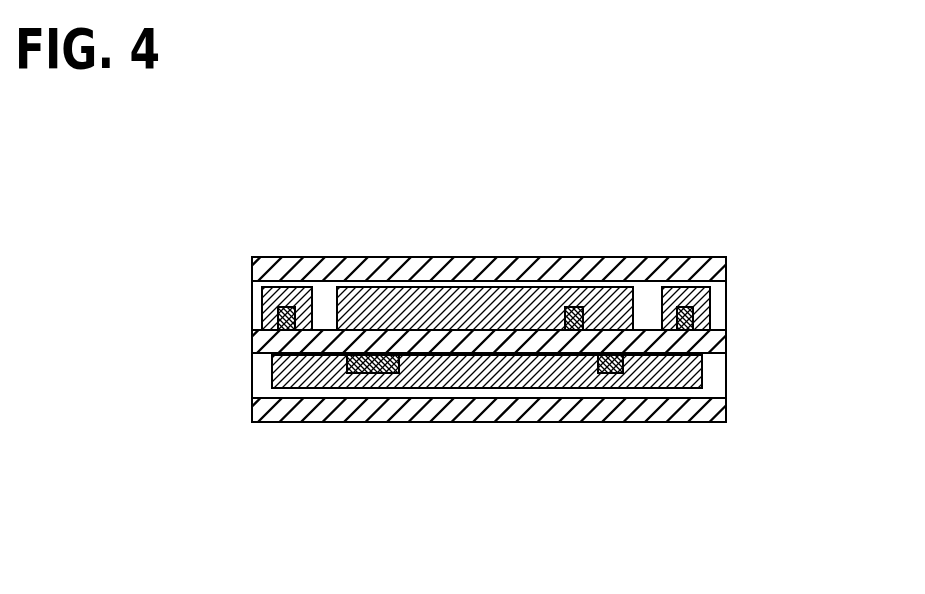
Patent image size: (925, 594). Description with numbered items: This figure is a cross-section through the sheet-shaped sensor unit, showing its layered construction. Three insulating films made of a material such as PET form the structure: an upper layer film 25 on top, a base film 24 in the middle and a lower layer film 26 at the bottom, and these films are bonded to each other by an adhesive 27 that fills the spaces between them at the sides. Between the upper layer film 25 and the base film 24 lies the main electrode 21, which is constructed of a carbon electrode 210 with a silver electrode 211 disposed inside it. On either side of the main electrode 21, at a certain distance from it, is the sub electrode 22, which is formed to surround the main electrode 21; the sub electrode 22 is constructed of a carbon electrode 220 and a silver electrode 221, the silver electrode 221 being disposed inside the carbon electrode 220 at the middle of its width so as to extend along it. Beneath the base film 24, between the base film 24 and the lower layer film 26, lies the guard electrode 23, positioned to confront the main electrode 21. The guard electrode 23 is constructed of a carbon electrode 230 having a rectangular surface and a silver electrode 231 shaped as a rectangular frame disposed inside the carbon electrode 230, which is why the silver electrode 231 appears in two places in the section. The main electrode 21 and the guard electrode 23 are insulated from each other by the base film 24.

The main electrode 21 is at (485, 224).
The carbon electrode 210 is at (437, 300).
The silver electrode 211 is at (575, 303).
The sub electrode 22 is at (490, 224).
The carbon electrode 220 is at (301, 293).
The silver electrode 221 is at (271, 251).
The guard electrode 23 is at (487, 465).
The carbon electrode 230 is at (468, 372).
The silver electrode 231 is at (368, 372).
The base film 24 is at (718, 342).
The upper layer film 25 is at (718, 267).
The lower layer film 26 is at (718, 408).
The adhesive 27 is at (256, 313).